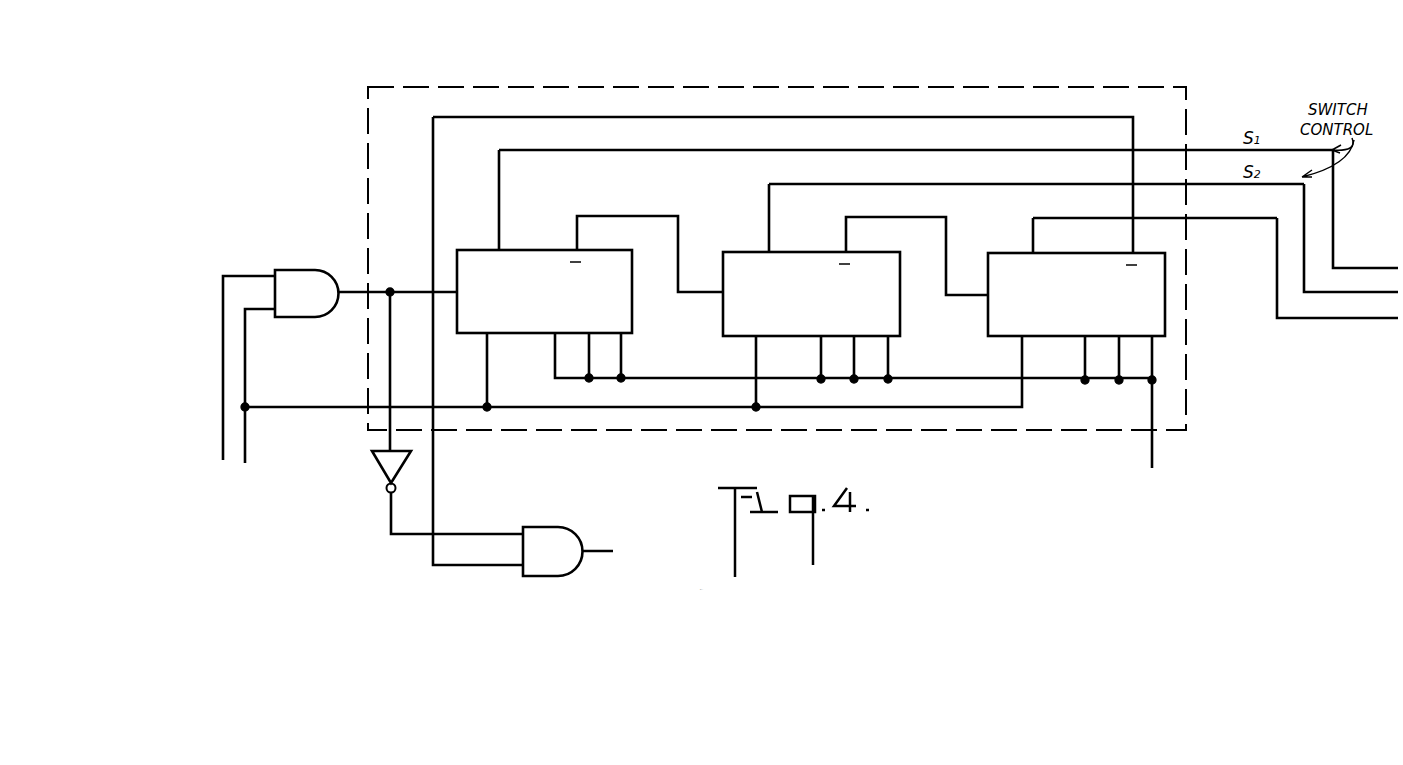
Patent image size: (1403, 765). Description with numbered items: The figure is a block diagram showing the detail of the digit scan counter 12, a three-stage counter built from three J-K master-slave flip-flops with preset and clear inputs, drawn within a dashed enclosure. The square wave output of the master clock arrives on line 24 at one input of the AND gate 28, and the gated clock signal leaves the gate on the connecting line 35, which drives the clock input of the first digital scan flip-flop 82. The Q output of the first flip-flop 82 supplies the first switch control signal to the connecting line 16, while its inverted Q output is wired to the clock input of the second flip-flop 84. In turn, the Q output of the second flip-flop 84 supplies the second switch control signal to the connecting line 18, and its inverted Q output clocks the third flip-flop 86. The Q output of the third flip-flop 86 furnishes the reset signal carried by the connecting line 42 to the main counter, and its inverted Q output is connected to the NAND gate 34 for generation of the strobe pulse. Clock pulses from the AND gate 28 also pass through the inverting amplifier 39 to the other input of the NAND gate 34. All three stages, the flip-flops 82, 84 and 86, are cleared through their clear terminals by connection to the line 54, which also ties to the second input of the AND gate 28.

The digit scan counter 12 is at (1205, 86).
The connecting line 16 is at (1335, 213).
The connecting line 18 is at (1333, 292).
The line 24 is at (220, 373).
The AND gate 28 is at (304, 317).
The NAND gate 34 is at (566, 532).
The connecting line 35 is at (350, 290).
The inverting amplifier 39 is at (381, 468).
The connecting line 42 is at (1275, 296).
The line 54 is at (247, 372).
The first digital scan flip-flop 82 is at (544, 248).
The second flip-flop 84 is at (815, 250).
The flip-flop 86 is at (1010, 250).